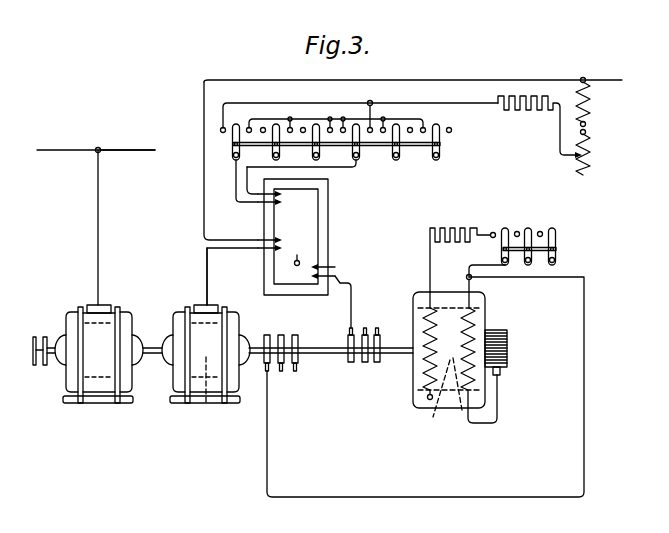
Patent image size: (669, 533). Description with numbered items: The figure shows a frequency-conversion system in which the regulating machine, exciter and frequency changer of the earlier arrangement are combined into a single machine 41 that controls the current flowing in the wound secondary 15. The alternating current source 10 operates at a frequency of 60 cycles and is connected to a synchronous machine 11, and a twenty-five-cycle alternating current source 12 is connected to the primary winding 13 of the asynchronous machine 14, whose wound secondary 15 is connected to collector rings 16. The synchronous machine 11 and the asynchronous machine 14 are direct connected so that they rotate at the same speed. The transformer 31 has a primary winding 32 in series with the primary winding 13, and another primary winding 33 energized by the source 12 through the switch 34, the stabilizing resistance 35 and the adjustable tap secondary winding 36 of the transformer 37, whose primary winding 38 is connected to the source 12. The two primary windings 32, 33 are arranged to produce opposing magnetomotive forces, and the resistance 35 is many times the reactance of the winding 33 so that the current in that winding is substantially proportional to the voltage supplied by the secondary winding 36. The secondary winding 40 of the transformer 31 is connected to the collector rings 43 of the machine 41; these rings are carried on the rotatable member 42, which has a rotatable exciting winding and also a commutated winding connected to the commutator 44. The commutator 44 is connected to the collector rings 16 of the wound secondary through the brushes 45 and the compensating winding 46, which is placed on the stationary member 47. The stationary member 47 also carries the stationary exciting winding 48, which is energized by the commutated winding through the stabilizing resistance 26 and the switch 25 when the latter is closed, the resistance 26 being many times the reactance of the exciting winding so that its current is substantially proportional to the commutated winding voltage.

The 60 cycle alternating current source 10 is at (128, 150).
The alternating current source 60 is at (96, 144).
The synchronous machine 11 is at (109, 305).
The 25 cycle alternating current source 12 is at (445, 79).
The primary winding 13 is at (195, 316).
The asynchronous machine 14 is at (220, 305).
The wound secondary 15 is at (207, 388).
The collector rings 16 is at (296, 335).
The switch 25 is at (568, 249).
The stabilizing resistance 26 is at (463, 228).
The transformer 31 is at (296, 237).
The primary winding 32 is at (253, 193).
The primary winding 33 is at (269, 184).
The switch 34 is at (365, 146).
The stabilizing resistance 35 is at (530, 112).
The adjustable tap secondary winding 36 is at (591, 156).
The transformer 37 is at (572, 91).
The primary winding 38 is at (591, 100).
The secondary winding 40 is at (335, 267).
The machine 41 is at (464, 292).
The rotatable member 42 is at (431, 398).
The collector rings 43 is at (377, 362).
The commutator 44 is at (505, 330).
The brushes 45 is at (500, 373).
The compensating winding 46 is at (457, 394).
The stationary member 47 is at (416, 300).
The stationary exciting winding 48 is at (419, 378).